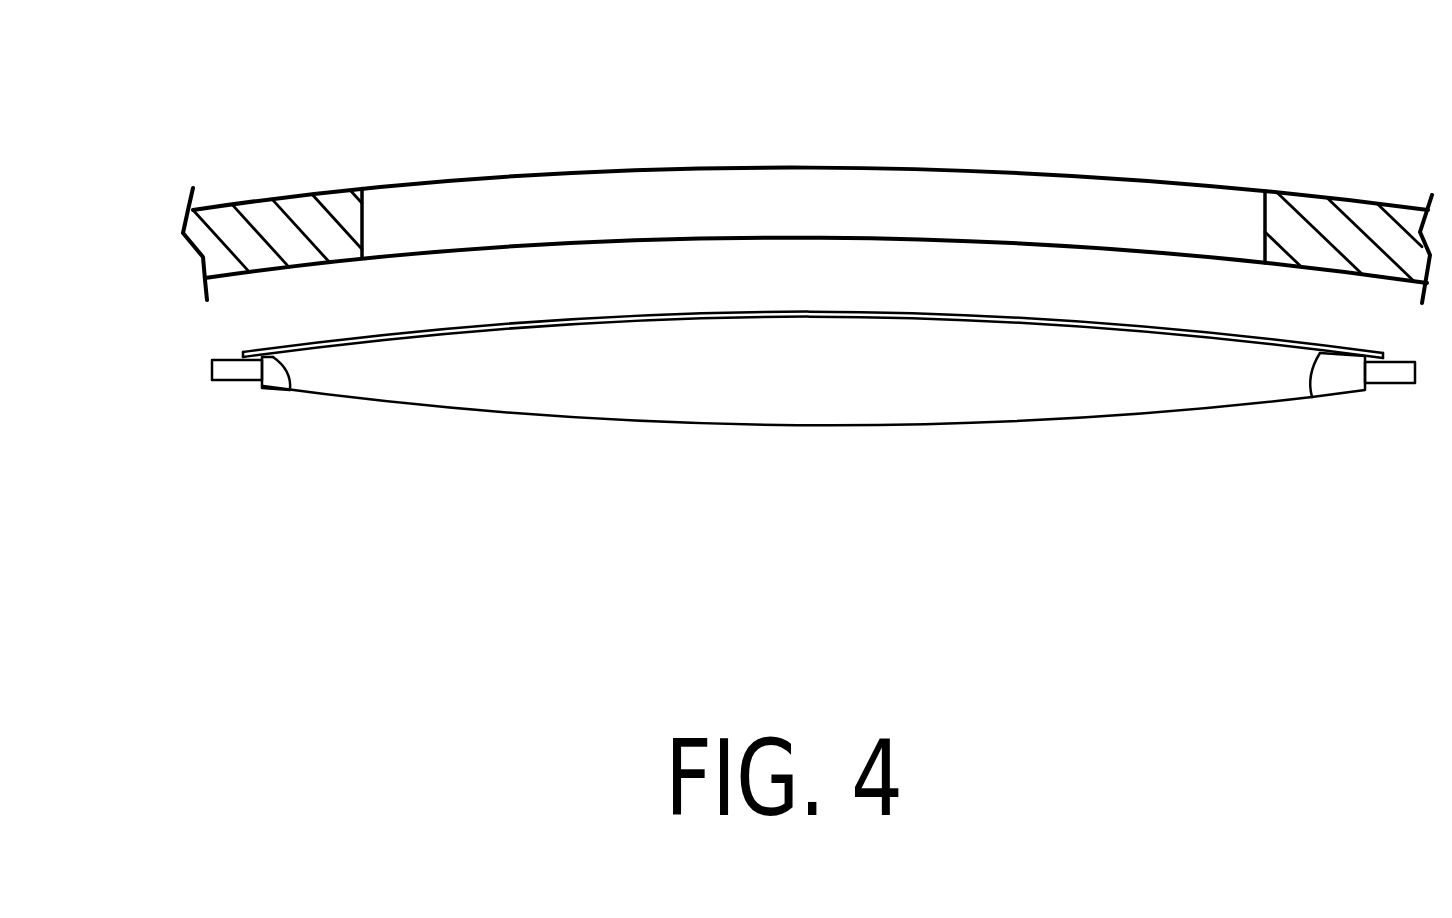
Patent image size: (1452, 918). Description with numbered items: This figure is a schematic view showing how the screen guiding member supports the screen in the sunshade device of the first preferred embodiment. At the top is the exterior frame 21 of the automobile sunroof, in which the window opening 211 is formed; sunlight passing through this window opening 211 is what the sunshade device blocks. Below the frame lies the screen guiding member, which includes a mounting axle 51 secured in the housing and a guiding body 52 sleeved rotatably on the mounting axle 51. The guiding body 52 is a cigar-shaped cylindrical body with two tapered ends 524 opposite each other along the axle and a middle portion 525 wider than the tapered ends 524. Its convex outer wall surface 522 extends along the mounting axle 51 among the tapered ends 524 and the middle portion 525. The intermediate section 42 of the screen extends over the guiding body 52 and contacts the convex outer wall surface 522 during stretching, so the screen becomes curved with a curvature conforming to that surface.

The exterior frame 21 is at (1315, 230).
The window opening 211 is at (1142, 200).
The intermediate section 42 is at (985, 315).
The mounting axle 51 is at (238, 380).
The guiding body 52 is at (1038, 403).
The convex outer wall surface 522 is at (745, 320).
The tapered ends 524 is at (290, 390).
The middle portion 525 is at (827, 320).